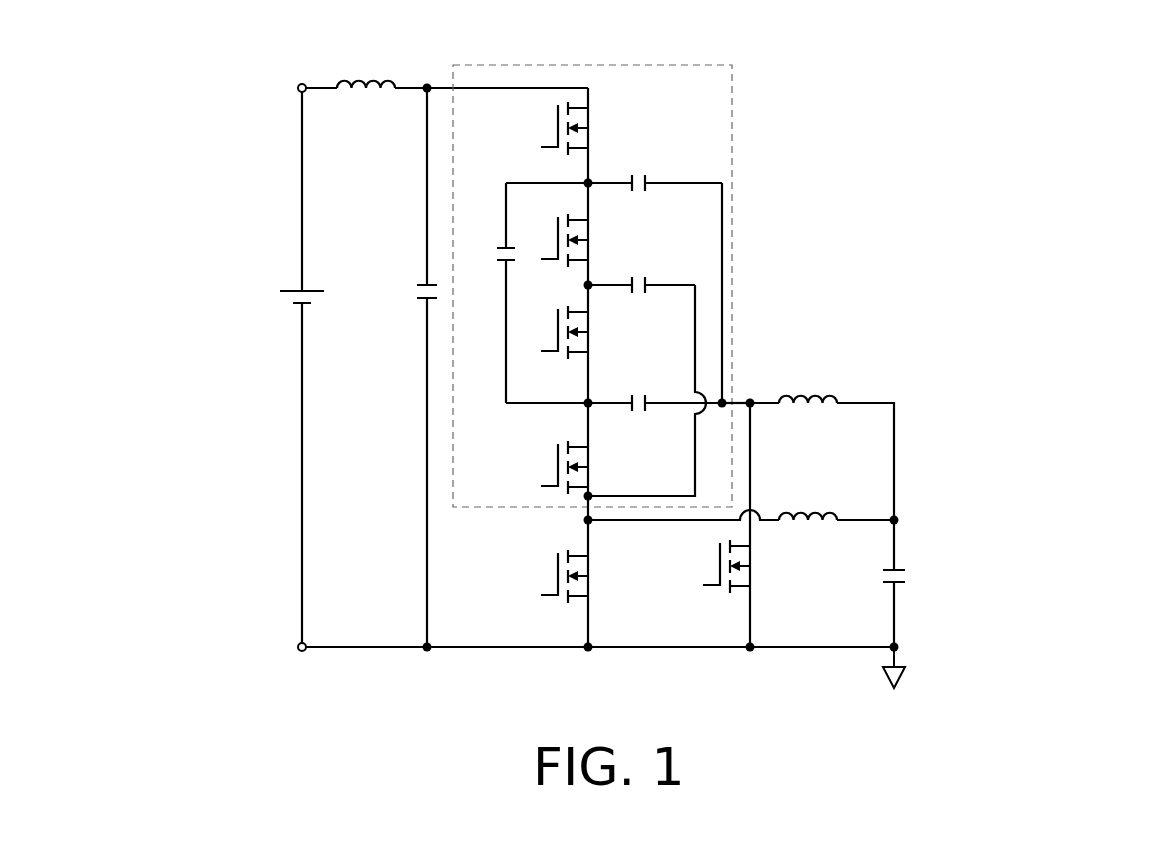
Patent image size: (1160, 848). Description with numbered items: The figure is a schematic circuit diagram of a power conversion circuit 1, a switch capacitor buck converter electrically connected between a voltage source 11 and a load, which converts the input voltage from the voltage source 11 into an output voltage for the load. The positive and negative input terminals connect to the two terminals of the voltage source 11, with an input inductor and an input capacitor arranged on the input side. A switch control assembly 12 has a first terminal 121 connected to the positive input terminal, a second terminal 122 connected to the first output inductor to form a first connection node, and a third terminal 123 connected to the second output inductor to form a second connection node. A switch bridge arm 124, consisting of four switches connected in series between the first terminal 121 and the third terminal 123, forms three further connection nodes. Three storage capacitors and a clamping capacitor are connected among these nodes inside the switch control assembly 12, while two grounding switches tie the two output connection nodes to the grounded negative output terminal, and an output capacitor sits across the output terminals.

The power conversion circuit 1 is at (1119, 60).
The voltage source 11 is at (302, 289).
The switch control assembly 12 is at (697, 63).
The first terminal 121 is at (447, 87).
The second terminal 122 is at (733, 398).
The third terminal 123 is at (585, 515).
The switch bridge arm 124 is at (628, 106).